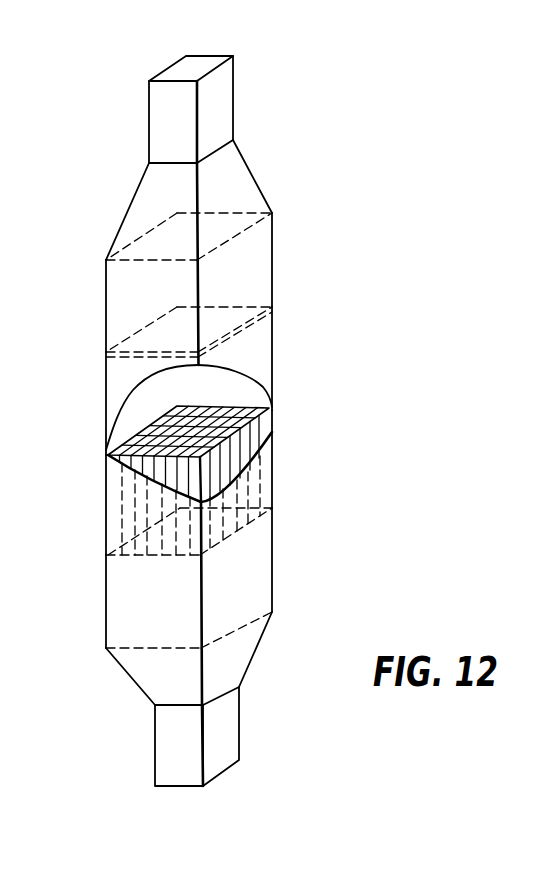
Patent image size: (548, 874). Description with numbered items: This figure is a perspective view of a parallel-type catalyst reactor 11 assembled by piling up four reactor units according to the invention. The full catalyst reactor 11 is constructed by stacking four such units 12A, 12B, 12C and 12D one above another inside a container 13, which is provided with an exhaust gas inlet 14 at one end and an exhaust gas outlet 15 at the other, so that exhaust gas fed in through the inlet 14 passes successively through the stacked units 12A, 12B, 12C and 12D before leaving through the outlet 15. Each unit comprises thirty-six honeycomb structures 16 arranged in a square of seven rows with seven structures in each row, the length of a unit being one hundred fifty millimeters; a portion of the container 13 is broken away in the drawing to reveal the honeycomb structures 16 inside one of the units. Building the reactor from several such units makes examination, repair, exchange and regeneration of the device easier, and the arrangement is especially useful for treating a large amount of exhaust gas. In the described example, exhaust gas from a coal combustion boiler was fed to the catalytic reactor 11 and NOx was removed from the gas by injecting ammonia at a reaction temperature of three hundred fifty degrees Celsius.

The catalyst reactor 11 is at (340, 329).
The reactor unit 12A is at (106, 298).
The reactor unit 12B is at (106, 394).
The reactor unit 12C is at (106, 485).
The reactor unit 12D is at (106, 600).
The container 13 is at (140, 185).
The exhaust gas inlet 14 is at (198, 67).
The exhaust gas outlet 15 is at (178, 787).
The honeycomb structure 16 is at (258, 436).